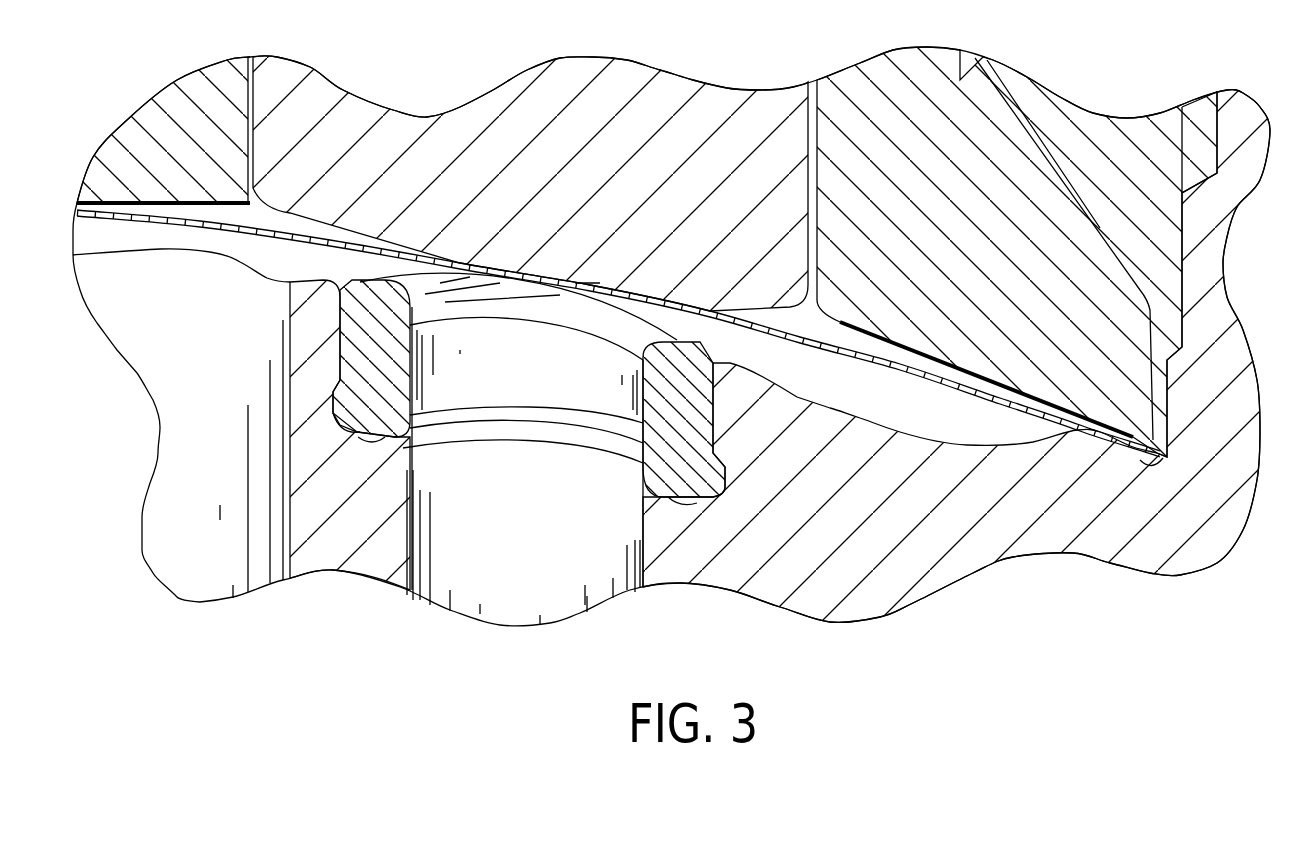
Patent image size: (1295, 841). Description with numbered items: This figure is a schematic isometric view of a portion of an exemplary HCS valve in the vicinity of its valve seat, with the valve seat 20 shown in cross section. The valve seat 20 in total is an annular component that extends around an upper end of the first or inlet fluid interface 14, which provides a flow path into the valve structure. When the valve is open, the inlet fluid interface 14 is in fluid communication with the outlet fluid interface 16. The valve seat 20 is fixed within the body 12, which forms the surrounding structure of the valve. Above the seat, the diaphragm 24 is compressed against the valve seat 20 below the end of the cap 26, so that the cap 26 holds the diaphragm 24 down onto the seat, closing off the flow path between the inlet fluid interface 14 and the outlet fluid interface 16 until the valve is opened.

The body 12 is at (975, 553).
The inlet fluid interface 14 is at (447, 598).
The outlet fluid interface 16 is at (190, 572).
The valve seat 20 is at (703, 495).
The diaphragm 24 is at (251, 257).
The cap 26 is at (513, 112).